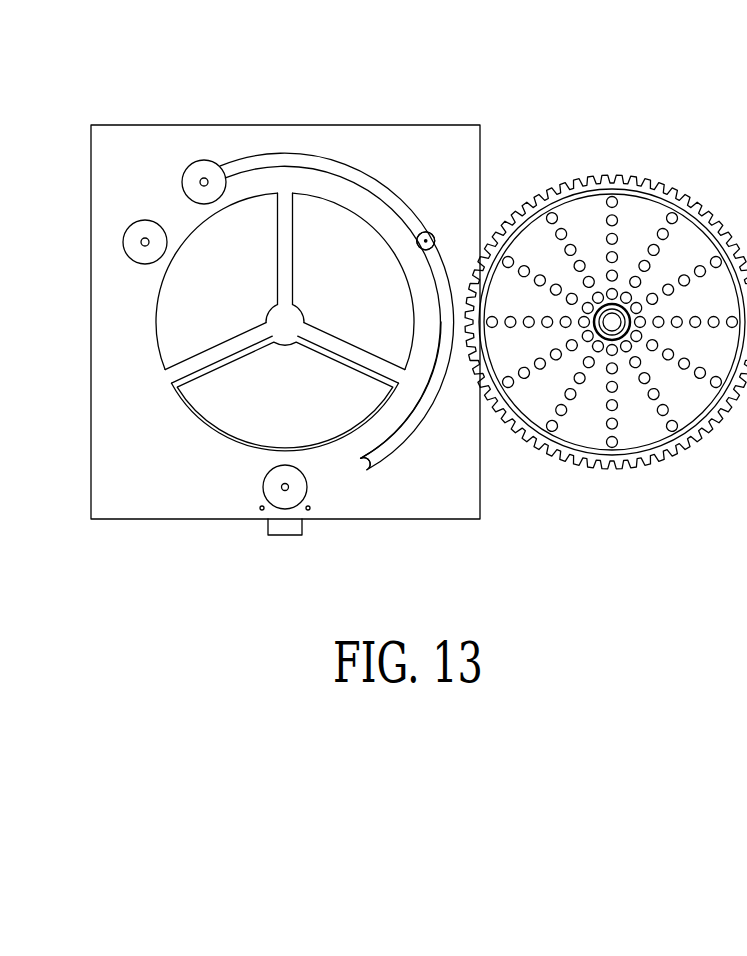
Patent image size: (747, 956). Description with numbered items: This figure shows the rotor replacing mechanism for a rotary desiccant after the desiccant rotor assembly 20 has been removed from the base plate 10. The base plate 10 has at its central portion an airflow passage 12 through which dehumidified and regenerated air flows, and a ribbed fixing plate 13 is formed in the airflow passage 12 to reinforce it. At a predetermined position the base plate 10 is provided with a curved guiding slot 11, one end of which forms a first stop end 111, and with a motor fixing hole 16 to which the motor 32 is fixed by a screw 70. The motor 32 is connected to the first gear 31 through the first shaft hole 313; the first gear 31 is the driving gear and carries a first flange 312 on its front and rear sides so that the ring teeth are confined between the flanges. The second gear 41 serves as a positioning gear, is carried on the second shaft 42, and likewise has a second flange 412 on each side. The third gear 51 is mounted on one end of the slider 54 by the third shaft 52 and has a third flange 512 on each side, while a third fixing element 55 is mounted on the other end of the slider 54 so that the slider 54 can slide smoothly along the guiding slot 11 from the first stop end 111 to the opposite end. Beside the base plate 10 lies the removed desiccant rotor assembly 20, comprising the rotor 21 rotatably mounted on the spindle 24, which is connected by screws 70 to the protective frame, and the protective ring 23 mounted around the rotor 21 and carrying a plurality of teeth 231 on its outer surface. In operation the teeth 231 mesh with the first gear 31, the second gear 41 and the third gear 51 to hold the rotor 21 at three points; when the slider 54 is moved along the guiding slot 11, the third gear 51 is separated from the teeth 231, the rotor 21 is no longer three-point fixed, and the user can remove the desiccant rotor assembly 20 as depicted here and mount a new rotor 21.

The base plate 10 is at (368, 152).
The guiding slot 11 is at (412, 427).
The first stop end 111 is at (372, 467).
The airflow passage 12 is at (225, 416).
The ribbed fixing plate 13 is at (283, 326).
The motor fixing hole 16 is at (262, 510).
The desiccant rotor assembly 20 is at (606, 327).
The rotor 21 is at (635, 217).
The protective ring 23 is at (568, 193).
The teeth 231 is at (642, 462).
The spindle 24 is at (610, 318).
The first gear 31 is at (286, 524).
The first flange 312 is at (311, 491).
The first shaft hole 313 is at (283, 487).
The motor 32 is at (285, 528).
The second gear 41 is at (87, 243).
The second shaft 42 is at (145, 240).
The second flange 412 is at (137, 255).
The third gear 51 is at (187, 143).
The third shaft 52 is at (187, 185).
The third flange 512 is at (202, 180).
The slider 54 is at (283, 162).
The third fixing element 55 is at (427, 232).
The screw 70 is at (428, 240).